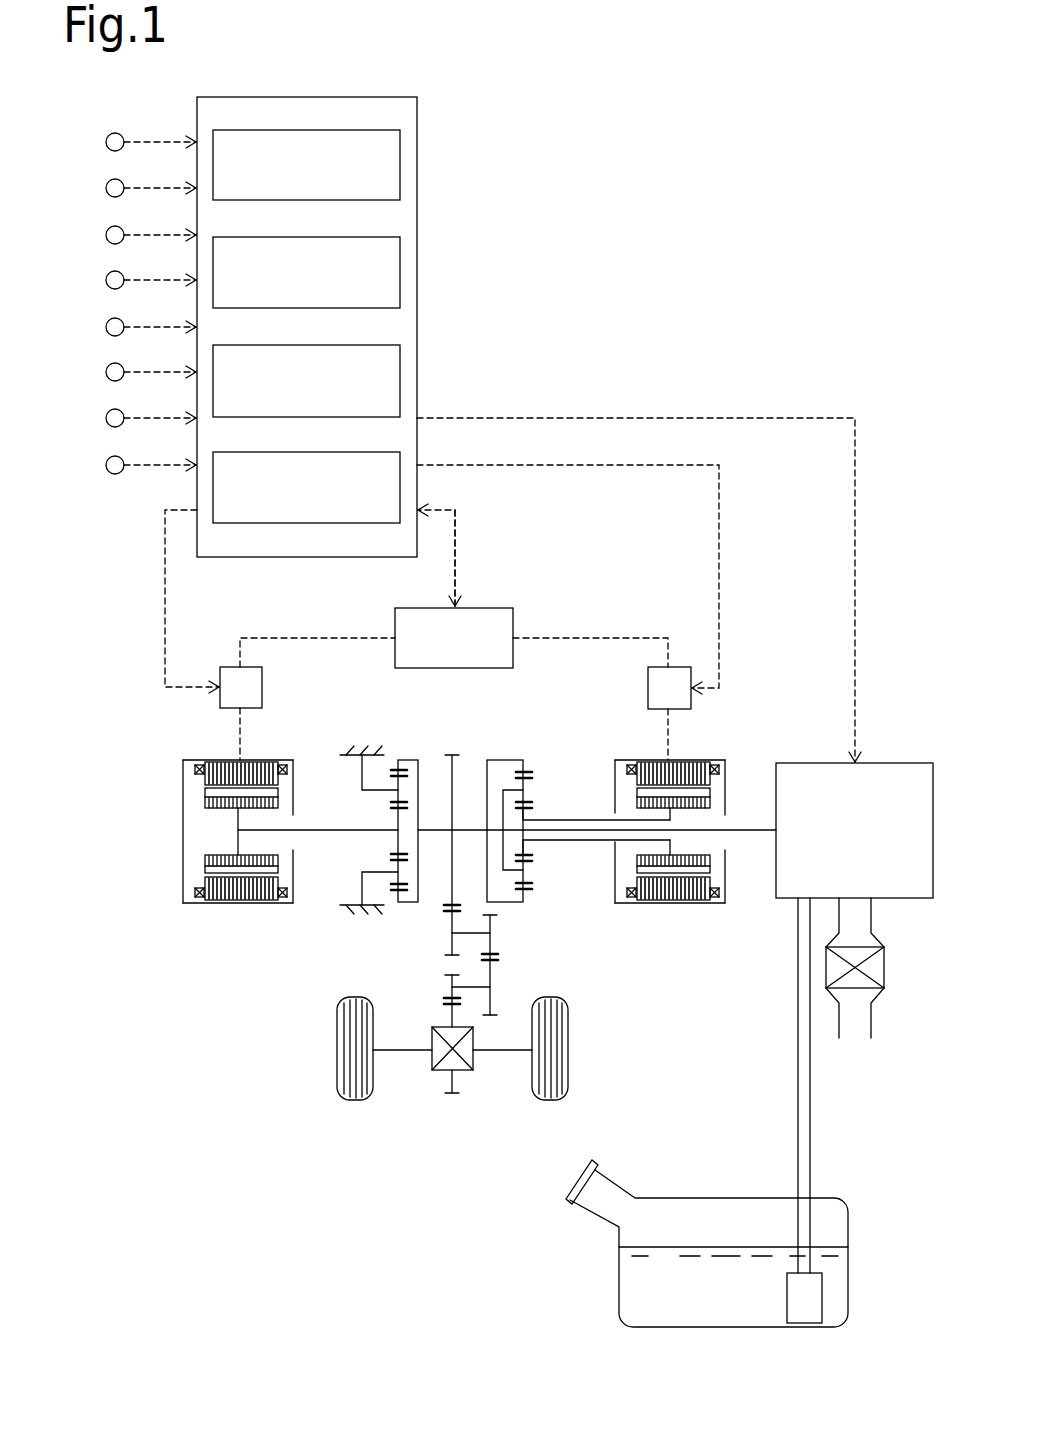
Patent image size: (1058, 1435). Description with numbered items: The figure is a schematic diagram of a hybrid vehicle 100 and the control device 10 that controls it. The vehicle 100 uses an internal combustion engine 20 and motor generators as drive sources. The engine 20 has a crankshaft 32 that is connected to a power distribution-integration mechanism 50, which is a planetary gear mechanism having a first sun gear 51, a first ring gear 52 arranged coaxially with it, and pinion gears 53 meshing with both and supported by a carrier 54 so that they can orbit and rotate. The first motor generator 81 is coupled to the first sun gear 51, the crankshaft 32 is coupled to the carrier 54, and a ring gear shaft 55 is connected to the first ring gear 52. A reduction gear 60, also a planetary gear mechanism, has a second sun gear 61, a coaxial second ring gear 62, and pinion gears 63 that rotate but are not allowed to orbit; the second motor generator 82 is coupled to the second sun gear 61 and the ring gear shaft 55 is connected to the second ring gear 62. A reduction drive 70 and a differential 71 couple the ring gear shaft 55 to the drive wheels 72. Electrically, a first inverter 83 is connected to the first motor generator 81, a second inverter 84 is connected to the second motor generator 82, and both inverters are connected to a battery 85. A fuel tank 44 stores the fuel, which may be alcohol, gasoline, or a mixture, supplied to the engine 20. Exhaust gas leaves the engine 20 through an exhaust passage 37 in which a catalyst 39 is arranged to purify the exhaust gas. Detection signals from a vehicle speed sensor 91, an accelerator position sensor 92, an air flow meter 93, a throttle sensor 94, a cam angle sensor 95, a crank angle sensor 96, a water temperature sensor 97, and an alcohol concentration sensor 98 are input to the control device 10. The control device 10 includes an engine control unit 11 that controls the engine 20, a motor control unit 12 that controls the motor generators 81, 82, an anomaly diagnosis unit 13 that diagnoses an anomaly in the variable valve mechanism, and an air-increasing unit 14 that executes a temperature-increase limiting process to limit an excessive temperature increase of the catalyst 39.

The control device 10 is at (355, 97).
The engine control unit 11 is at (340, 130).
The motor control unit 12 is at (340, 237).
The anomaly diagnosis unit 13 is at (340, 345).
The air-increasing unit 14 is at (340, 452).
The internal combustion engine 20 is at (901, 915).
The crankshaft 32 is at (745, 836).
The exhaust passage 37 is at (868, 1020).
The catalyst 39 is at (882, 968).
The fuel tank 44 is at (848, 1228).
The power distribution-integration mechanism 50 is at (578, 814).
The first sun gear 51 is at (532, 807).
The first ring gear 52 is at (532, 775).
The pinion gears 53 is at (532, 860).
The carrier 54 is at (511, 872).
The ring gear shaft 55 is at (467, 826).
The reduction gear 60 is at (350, 829).
The second sun gear 61 is at (396, 820).
The second ring gear 62 is at (391, 768).
The pinion gears 63 is at (396, 888).
The reduction drive 70 is at (513, 964).
The differential 71 is at (440, 1072).
The drive wheels 72 is at (335, 1058).
The first motor generator 81 is at (716, 760).
The second motor generator 82 is at (183, 840).
The first inverter 83 is at (678, 667).
The second inverter 84 is at (228, 667).
The battery 85 is at (488, 608).
The vehicle speed sensor 91 is at (106, 142).
The accelerator position sensor 92 is at (106, 188).
The air flow meter 93 is at (106, 235).
The throttle sensor 94 is at (106, 280).
The cam angle sensor 95 is at (106, 327).
The crank angle sensor 96 is at (106, 372).
The water temperature sensor 97 is at (106, 418).
The alcohol concentration sensor 98 is at (106, 465).
The vehicle 100 is at (235, 1033).